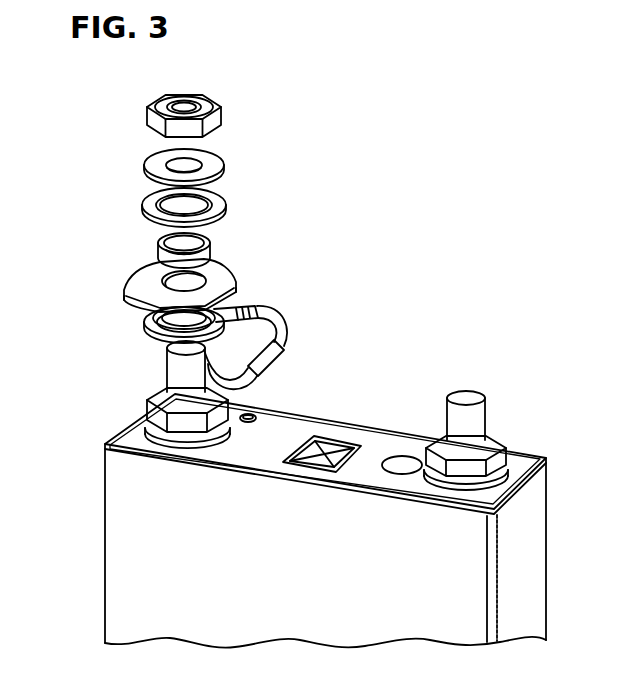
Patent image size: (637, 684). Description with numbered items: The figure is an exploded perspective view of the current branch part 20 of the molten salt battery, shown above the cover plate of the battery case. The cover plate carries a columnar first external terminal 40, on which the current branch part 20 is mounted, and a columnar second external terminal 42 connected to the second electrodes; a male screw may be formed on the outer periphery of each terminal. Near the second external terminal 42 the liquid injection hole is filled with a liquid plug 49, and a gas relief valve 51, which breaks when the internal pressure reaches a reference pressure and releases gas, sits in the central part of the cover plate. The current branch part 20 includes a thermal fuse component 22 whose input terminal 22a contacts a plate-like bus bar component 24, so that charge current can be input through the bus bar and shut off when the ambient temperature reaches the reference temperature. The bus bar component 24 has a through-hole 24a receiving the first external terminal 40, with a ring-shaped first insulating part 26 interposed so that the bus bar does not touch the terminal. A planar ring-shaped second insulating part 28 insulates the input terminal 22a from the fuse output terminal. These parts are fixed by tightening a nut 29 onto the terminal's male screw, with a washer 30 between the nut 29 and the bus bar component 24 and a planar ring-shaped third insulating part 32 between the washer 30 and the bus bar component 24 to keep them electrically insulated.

The current branch part 20 is at (297, 246).
The thermal fuse component 22 is at (277, 366).
The input terminal 22a is at (147, 318).
The bus bar component 24 is at (136, 290).
The through-hole 24a is at (206, 288).
The first insulating part 26 is at (213, 245).
The second insulating part 28 is at (144, 329).
The nut 29 is at (222, 115).
The washer 30 is at (146, 166).
The third insulating part 32 is at (146, 209).
The first external terminal 40 is at (178, 378).
The second external terminal 42 is at (472, 427).
The liquid plug 49 is at (402, 472).
The gas relief valve 51 is at (340, 437).